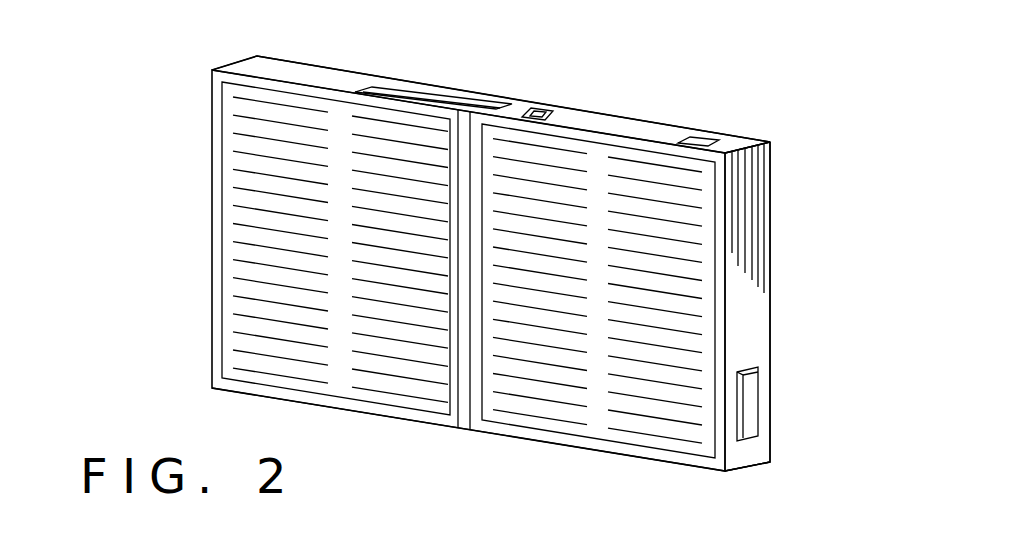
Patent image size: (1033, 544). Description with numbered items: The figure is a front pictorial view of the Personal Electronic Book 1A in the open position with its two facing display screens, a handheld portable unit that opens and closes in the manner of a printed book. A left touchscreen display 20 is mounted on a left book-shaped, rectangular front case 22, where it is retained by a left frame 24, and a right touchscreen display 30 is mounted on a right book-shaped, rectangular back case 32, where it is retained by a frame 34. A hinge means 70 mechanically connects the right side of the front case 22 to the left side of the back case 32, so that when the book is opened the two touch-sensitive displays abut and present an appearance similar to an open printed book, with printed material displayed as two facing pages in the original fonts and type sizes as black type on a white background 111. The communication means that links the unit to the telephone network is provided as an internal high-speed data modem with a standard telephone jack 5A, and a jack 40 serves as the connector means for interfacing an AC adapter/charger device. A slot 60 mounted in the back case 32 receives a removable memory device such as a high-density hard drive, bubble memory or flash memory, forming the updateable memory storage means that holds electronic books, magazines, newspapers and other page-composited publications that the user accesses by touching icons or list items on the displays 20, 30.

The Personal Electronic Book 1A is at (255, 57).
The left front case 22 is at (332, 75).
The left frame 24 is at (405, 105).
The jack 40 is at (540, 113).
The hinge means 70 is at (527, 113).
The RJ-11 telephone jack 5A is at (700, 142).
The left touchscreen display 20 is at (234, 218).
The black type on a white background 111 is at (256, 348).
The right touchscreen display 30 is at (593, 422).
The right back case 32 is at (760, 293).
The slot 60 is at (747, 410).
The frame 34 is at (678, 457).